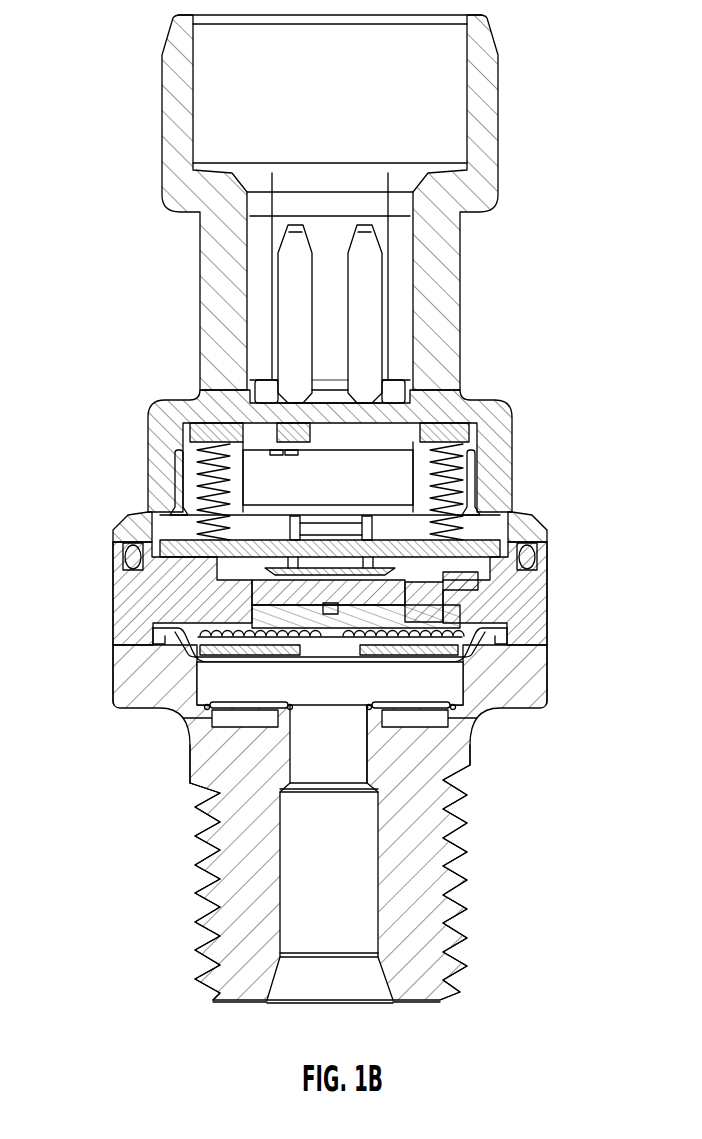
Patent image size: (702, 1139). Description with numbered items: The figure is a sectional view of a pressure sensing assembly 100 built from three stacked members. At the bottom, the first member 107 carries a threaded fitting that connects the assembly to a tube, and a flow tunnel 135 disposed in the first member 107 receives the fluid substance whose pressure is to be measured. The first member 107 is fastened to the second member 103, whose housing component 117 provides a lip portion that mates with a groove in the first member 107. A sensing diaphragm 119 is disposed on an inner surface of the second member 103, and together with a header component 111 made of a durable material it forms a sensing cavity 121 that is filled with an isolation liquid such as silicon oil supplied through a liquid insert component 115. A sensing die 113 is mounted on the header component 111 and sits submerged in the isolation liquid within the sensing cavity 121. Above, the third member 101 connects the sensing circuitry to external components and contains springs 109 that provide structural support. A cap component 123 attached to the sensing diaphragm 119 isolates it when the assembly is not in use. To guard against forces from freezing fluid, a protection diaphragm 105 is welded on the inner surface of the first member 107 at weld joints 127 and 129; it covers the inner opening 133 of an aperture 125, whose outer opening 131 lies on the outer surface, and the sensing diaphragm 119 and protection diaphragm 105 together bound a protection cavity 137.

The pressure sensing assembly 100 is at (561, 262).
The third member 101 is at (180, 123).
The second member 103 is at (113, 568).
The protection diaphragm 105 is at (288, 712).
The first member 107 is at (228, 967).
The springs 109 is at (460, 457).
The header component 111 is at (287, 590).
The sensing die 113 is at (470, 600).
The liquid insert component 115 is at (340, 603).
The housing component 117 is at (140, 617).
The sensing diaphragm 119 is at (222, 628).
The sensing cavity 121 is at (485, 650).
The cap component 123 is at (340, 658).
The aperture 125 is at (228, 718).
The weld joint 127 is at (412, 685).
The weld joint 129 is at (373, 712).
The outer opening 131 is at (183, 724).
The inner opening 133 is at (253, 708).
The flow tunnel 135 is at (345, 897).
The protection cavity 137 is at (470, 712).